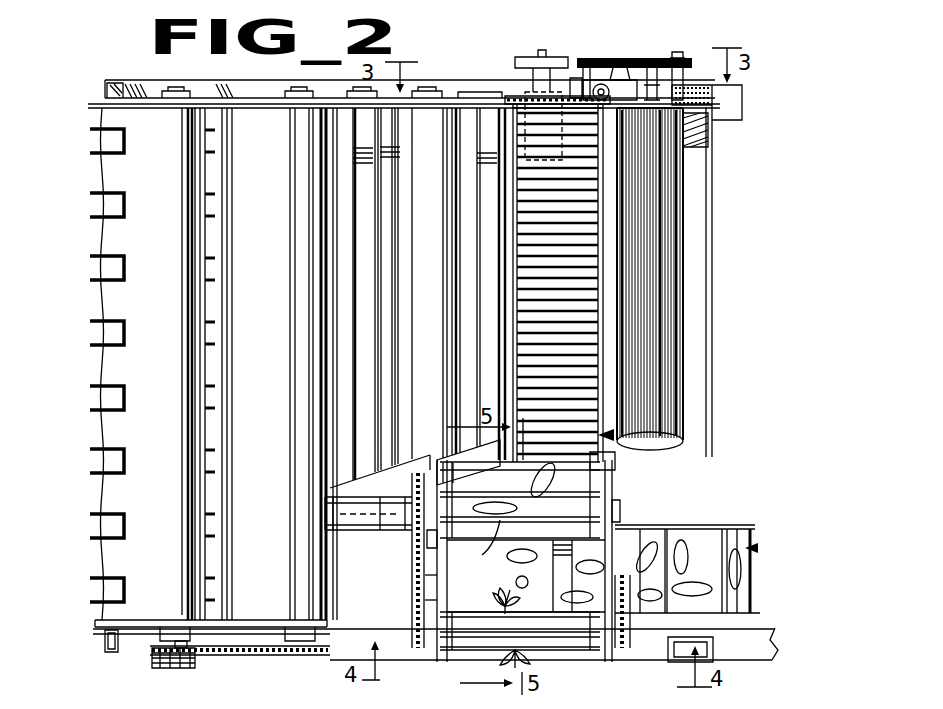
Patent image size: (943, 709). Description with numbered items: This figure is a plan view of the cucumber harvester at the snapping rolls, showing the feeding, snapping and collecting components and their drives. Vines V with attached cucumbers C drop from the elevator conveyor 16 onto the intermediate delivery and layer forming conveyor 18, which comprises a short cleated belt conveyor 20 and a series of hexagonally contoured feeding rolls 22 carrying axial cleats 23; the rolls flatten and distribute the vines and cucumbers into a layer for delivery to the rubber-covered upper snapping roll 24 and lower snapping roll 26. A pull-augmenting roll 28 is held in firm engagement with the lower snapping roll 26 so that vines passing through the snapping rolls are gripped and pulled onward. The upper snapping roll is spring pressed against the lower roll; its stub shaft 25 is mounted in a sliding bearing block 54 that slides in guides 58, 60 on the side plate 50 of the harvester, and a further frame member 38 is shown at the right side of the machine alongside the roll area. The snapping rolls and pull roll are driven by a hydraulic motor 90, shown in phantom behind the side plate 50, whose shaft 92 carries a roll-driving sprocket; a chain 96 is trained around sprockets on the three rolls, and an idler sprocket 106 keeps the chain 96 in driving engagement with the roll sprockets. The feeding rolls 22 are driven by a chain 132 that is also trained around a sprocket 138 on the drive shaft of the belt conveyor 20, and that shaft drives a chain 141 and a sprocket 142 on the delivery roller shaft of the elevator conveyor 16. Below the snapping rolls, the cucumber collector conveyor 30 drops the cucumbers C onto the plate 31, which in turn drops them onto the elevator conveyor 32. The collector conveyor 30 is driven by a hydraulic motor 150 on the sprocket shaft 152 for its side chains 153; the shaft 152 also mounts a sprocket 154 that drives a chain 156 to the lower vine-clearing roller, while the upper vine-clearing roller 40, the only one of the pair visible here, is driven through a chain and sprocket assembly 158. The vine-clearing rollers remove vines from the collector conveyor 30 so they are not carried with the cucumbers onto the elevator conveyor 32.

The elevator conveyor 16 is at (153, 377).
The intermediate delivery and layer forming conveyor 18 is at (271, 380).
The cleated belt conveyor 20 is at (330, 565).
The feeding rolls 22 is at (420, 318).
The axial cleats 23 is at (405, 257).
The upper snapping roll 24 is at (614, 434).
The stub shaft 25 is at (606, 84).
The lower snapping roll 26 is at (620, 462).
The pull-augmenting roll 28 is at (681, 185).
The cucumber collector conveyor 30 is at (607, 486).
The plate 31 is at (424, 584).
The elevator conveyor 32 is at (758, 548).
The side plate 38 is at (703, 237).
The upper vine-clearing roller 40 is at (553, 650).
The side plate 50 is at (462, 98).
The sliding bearing block 54 is at (640, 58).
The guide 58 is at (653, 68).
The guide 60 is at (576, 78).
The hydraulic motor 90 is at (520, 98).
The shaft 92 is at (538, 57).
The chain 96 is at (593, 70).
The idler sprocket 106 is at (686, 52).
The chain 132 is at (275, 660).
The sprocket 138 is at (200, 656).
The chain 141 is at (174, 668).
The sprocket 142 is at (152, 664).
The hydraulic motor 150 is at (330, 511).
The sprocket shaft 152 is at (426, 540).
The side chains 153 is at (620, 510).
The sprocket 154 is at (411, 480).
The chain 156 is at (424, 604).
The chain and sprocket assembly 158 is at (632, 640).
The cucumbers C is at (516, 580).
The vines V is at (498, 600).